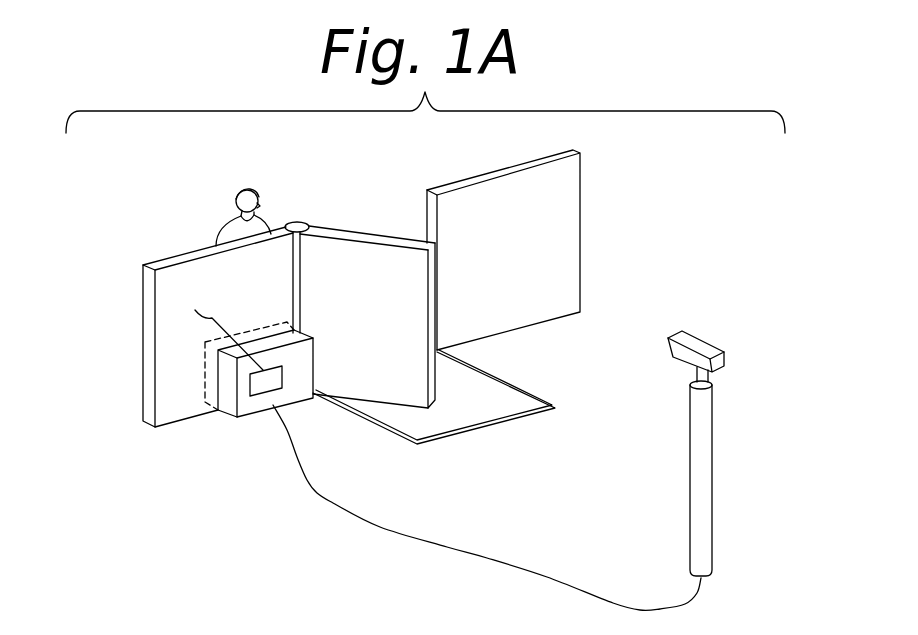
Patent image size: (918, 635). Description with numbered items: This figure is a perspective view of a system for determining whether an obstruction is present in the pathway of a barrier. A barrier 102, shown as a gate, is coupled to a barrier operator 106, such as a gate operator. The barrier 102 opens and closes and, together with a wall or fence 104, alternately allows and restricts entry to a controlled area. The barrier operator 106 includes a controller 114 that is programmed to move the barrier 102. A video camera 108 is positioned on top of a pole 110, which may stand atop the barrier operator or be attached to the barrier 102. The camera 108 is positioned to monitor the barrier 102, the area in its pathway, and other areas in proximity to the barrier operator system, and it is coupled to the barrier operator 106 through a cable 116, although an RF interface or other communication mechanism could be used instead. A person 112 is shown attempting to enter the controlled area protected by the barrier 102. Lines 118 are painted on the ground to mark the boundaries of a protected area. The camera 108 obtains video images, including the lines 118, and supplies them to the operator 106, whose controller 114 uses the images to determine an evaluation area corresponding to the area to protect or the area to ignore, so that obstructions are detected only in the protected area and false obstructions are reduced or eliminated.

The barrier 102 is at (372, 233).
The wall or fence 104 is at (563, 160).
The barrier operator 106 is at (220, 410).
The video camera 108 is at (707, 342).
The pole 110 is at (712, 474).
The person 112 is at (262, 222).
The controller 114 is at (258, 390).
The cable 116 is at (487, 557).
The lines 118 is at (370, 423).